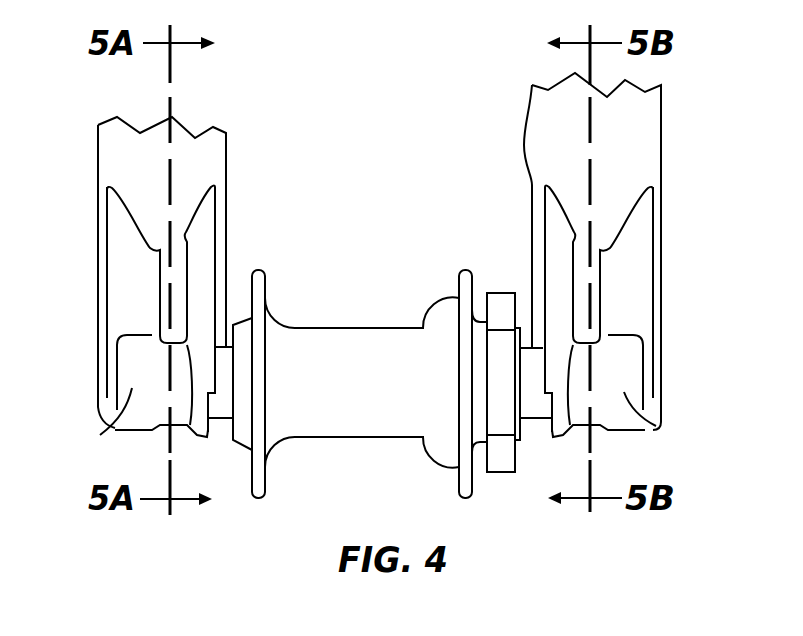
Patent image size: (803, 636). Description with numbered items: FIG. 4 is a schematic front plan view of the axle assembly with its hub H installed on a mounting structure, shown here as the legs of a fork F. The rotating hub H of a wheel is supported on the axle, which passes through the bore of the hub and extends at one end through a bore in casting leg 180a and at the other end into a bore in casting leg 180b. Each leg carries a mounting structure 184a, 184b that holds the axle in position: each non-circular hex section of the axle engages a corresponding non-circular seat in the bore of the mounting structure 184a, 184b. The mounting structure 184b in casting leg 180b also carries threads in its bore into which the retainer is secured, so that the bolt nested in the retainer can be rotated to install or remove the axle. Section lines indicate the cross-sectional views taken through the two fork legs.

The fork F is at (519, 106).
The hub H is at (342, 308).
The casting leg 180a is at (210, 158).
The casting leg 180b is at (636, 132).
The mounting structure 184a is at (100, 435).
The mounting structure 184b is at (656, 426).